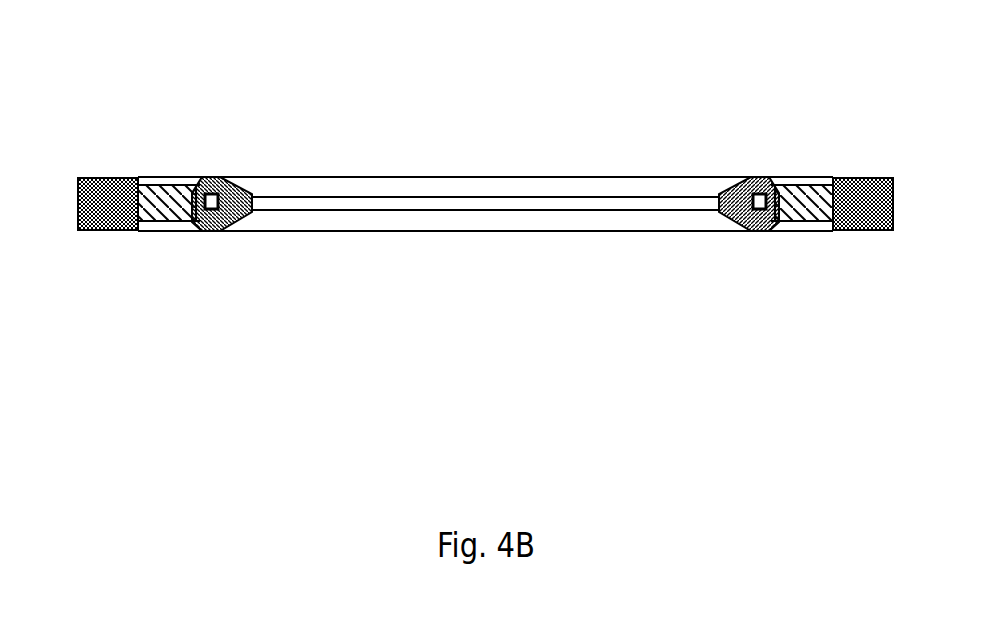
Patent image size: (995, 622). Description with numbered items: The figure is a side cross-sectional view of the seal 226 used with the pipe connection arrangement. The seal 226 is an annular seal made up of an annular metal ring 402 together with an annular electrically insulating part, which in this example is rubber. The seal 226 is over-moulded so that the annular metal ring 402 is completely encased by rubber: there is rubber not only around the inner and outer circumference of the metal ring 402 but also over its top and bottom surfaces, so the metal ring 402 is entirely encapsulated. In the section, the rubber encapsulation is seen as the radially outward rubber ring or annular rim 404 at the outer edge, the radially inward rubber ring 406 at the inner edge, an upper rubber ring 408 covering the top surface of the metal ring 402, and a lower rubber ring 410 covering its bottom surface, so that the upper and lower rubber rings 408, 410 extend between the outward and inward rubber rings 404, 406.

The seal 226 is at (667, 127).
The annular metal ring 402 is at (171, 204).
The radially outward rubber ring 404 is at (112, 185).
The radially inward rubber ring 406 is at (238, 212).
The upper rubber ring 408 is at (403, 184).
The lower rubber ring 410 is at (163, 215).